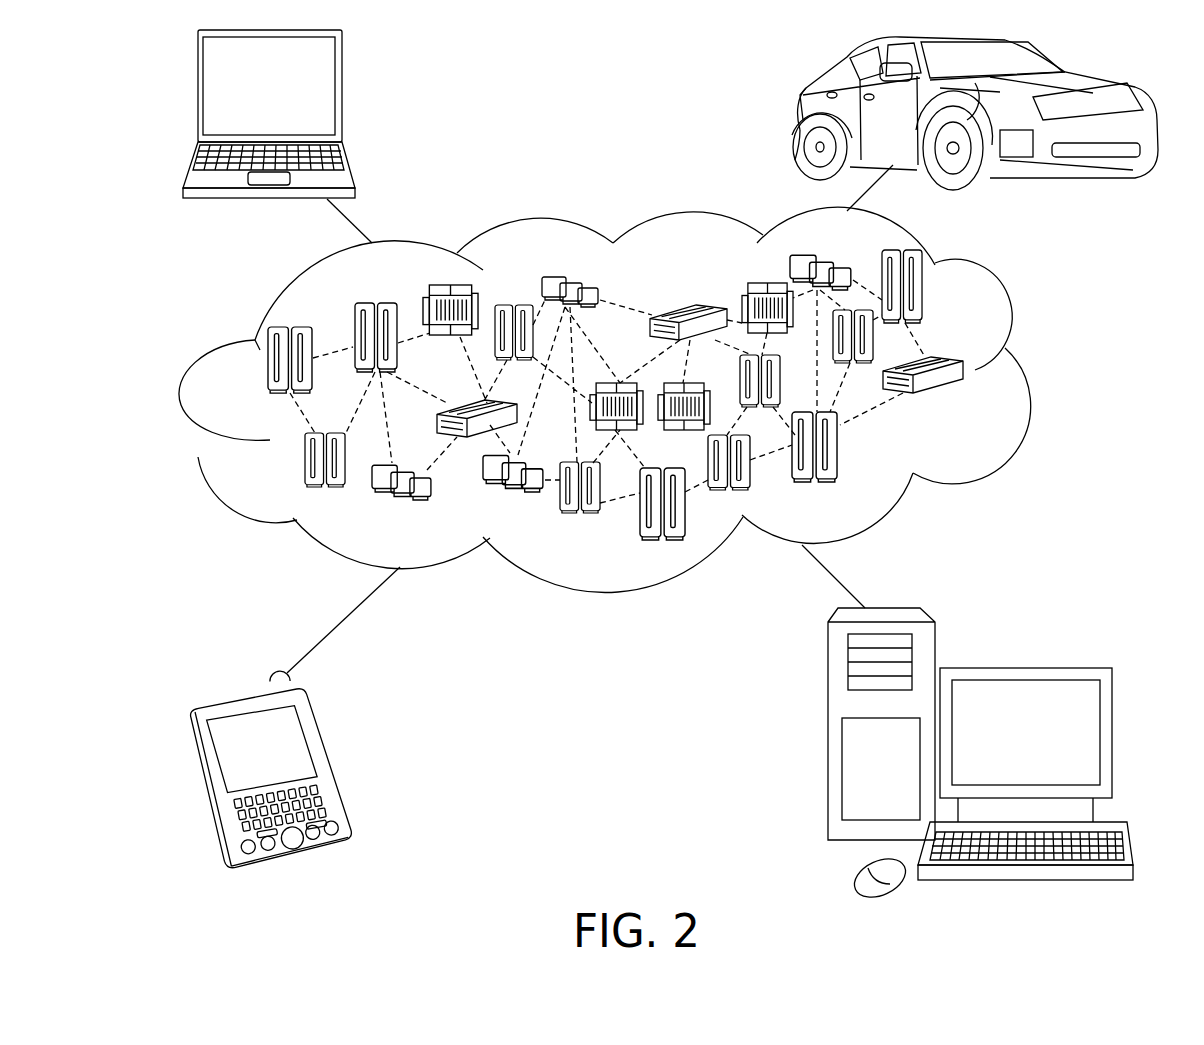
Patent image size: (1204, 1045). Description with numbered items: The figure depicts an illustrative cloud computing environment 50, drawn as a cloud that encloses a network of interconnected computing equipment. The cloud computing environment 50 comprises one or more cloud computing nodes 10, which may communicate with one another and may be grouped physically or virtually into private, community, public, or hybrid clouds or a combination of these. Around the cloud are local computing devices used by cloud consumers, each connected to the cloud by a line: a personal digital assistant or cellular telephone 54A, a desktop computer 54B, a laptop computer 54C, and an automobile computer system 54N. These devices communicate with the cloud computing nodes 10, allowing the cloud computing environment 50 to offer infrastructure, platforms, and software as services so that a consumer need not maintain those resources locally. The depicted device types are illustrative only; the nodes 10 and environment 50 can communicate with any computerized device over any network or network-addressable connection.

The cloud computing node 10 is at (968, 407).
The cloud computing environment 50 is at (1027, 373).
The personal digital assistant or cellular telephone 54A is at (328, 763).
The desktop computer 54B is at (1023, 668).
The laptop computer 54C is at (342, 95).
The automobile computer system 54N is at (800, 108).